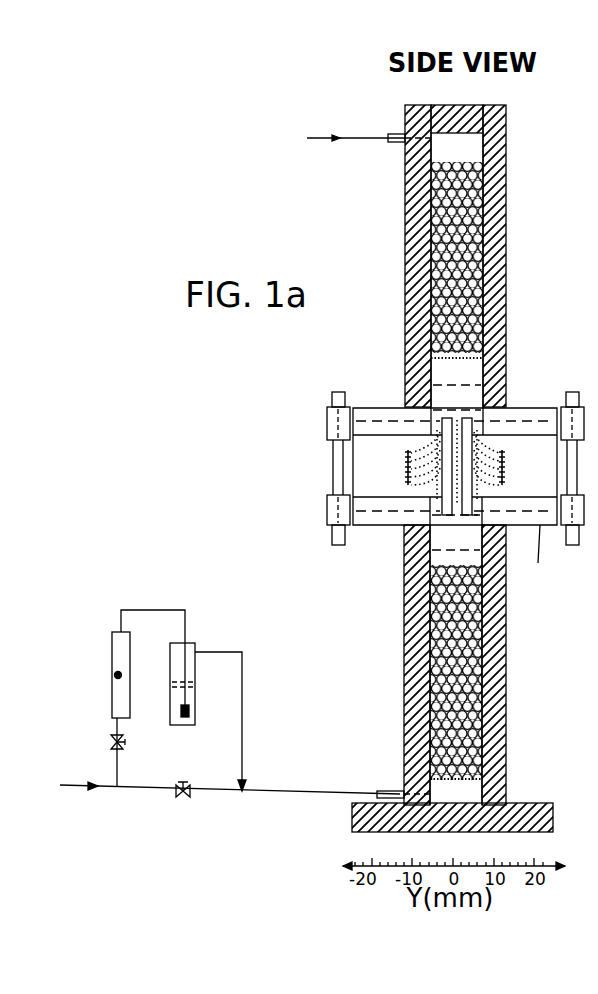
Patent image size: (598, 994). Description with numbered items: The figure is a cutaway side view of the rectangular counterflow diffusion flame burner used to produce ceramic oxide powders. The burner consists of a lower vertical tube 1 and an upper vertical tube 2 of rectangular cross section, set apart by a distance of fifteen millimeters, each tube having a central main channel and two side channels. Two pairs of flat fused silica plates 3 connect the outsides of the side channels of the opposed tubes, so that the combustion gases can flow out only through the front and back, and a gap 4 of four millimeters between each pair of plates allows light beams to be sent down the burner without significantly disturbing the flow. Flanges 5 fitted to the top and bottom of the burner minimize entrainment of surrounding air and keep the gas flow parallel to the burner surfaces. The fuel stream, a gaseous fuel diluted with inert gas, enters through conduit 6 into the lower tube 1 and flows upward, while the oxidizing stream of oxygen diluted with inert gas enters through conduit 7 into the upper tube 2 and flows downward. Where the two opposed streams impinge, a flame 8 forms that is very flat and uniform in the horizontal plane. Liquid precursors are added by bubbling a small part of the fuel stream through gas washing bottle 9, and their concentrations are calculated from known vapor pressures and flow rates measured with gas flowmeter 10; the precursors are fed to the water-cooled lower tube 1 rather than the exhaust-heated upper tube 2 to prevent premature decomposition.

The lower vertical tube 1 is at (404, 650).
The upper vertical tube 2 is at (361, 257).
The flat fused silica plates 3 is at (378, 438).
The gap 4 is at (452, 508).
The flanges 5 is at (360, 438).
The conduit 6 is at (288, 795).
The conduit 7 is at (363, 138).
The flame 8 is at (405, 468).
The gas washing bottle 9 is at (185, 725).
The gas flowmeter 10 is at (112, 670).